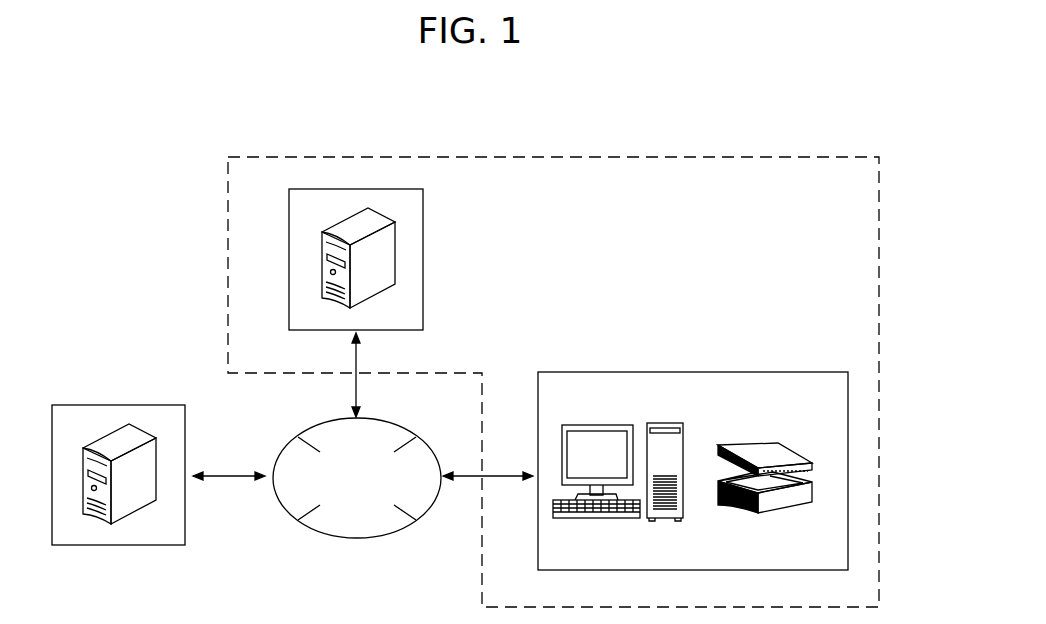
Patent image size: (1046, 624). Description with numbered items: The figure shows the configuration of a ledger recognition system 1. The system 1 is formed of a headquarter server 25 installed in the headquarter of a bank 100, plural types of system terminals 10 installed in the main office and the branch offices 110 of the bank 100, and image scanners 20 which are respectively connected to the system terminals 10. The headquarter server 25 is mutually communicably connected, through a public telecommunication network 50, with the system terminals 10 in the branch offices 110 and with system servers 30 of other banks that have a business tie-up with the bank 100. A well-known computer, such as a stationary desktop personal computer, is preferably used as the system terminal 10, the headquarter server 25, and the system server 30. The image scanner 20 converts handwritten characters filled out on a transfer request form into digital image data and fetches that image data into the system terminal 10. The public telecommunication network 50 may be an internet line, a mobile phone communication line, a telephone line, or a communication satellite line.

The ledger recognition system 1 is at (713, 157).
The bank 100 is at (553, 382).
The headquarter server 25 is at (382, 262).
The system server 30 is at (133, 426).
The public telecommunication network 50 is at (391, 419).
The branch office 110 is at (712, 371).
The system terminal 10 is at (612, 425).
The image scanner 20 is at (775, 450).